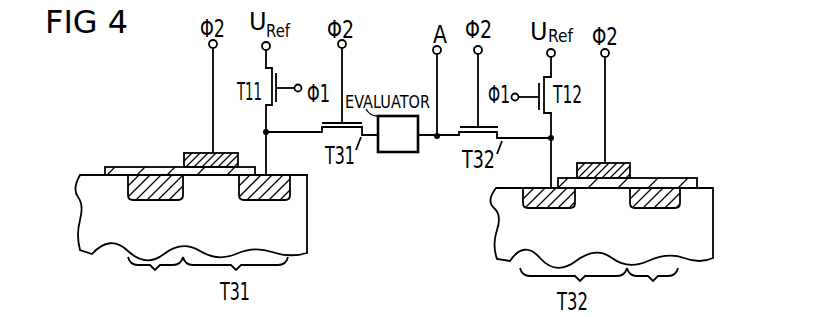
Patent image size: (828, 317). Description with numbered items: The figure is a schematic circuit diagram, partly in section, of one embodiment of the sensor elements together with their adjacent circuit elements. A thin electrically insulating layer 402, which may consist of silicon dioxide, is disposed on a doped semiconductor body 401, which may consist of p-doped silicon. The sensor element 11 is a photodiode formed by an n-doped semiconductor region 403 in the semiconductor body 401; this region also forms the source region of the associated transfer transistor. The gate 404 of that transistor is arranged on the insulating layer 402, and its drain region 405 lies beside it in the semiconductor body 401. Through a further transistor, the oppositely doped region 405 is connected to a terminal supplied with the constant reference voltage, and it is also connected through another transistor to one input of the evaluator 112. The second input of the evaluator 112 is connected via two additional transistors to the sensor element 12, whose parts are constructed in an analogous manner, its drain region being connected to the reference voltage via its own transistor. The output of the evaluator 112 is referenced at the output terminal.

The doped semiconductor body 401 is at (297, 223).
The thin electrically insulating layer 402 is at (142, 170).
The n-doped semiconductor region 403 is at (152, 194).
The gate 404 is at (192, 147).
The drain region 405 is at (269, 193).
The sensor element 11 is at (155, 281).
The sensor element 12 is at (652, 292).
The evaluator 112 is at (392, 130).